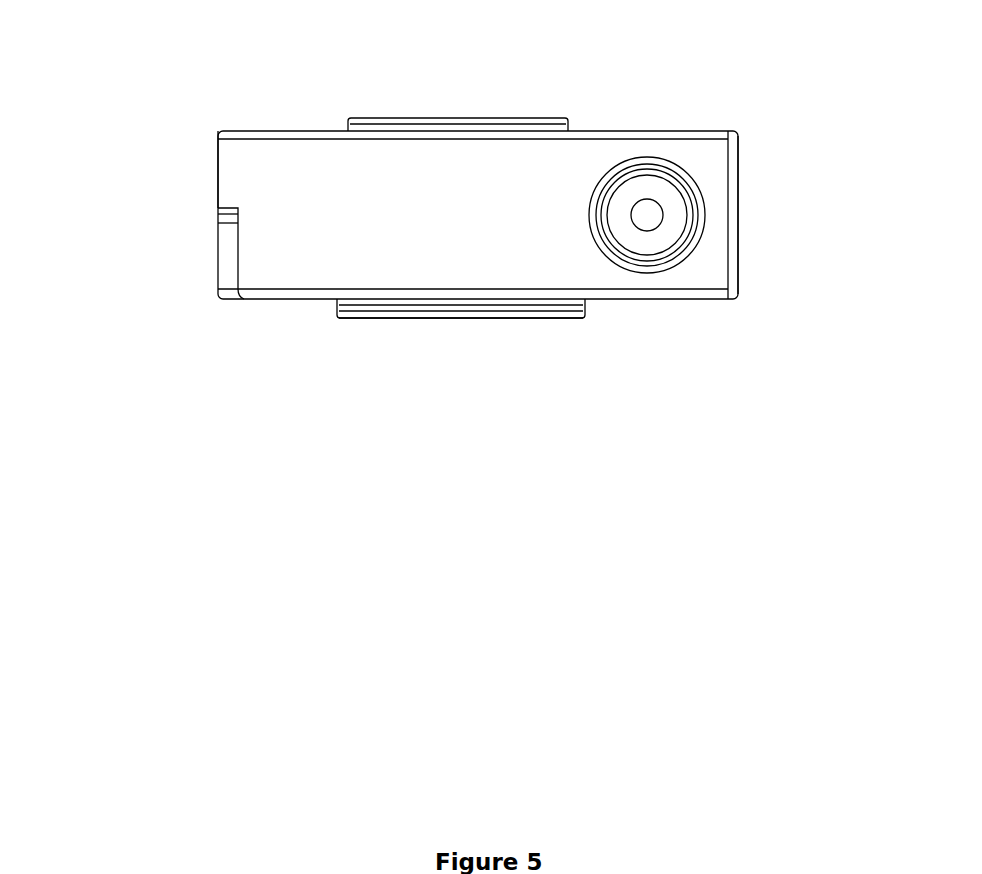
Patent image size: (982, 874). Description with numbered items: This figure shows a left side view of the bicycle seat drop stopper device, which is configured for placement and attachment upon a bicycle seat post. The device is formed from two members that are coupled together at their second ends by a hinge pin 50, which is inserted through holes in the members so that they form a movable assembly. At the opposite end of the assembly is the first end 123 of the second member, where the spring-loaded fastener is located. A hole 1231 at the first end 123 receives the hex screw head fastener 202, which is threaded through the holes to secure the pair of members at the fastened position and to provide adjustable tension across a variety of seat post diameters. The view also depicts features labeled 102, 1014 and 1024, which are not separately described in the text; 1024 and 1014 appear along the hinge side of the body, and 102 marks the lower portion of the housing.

The hinge pin 50 is at (276, 112).
The housing upper side wall 1024 is at (207, 169).
The housing lower side wall notch 1014 is at (207, 269).
The housing bottom tab 102 is at (320, 353).
The first end 123 is at (747, 210).
The hole 1231 is at (703, 252).
The hex screw head fastener 202 is at (645, 250).